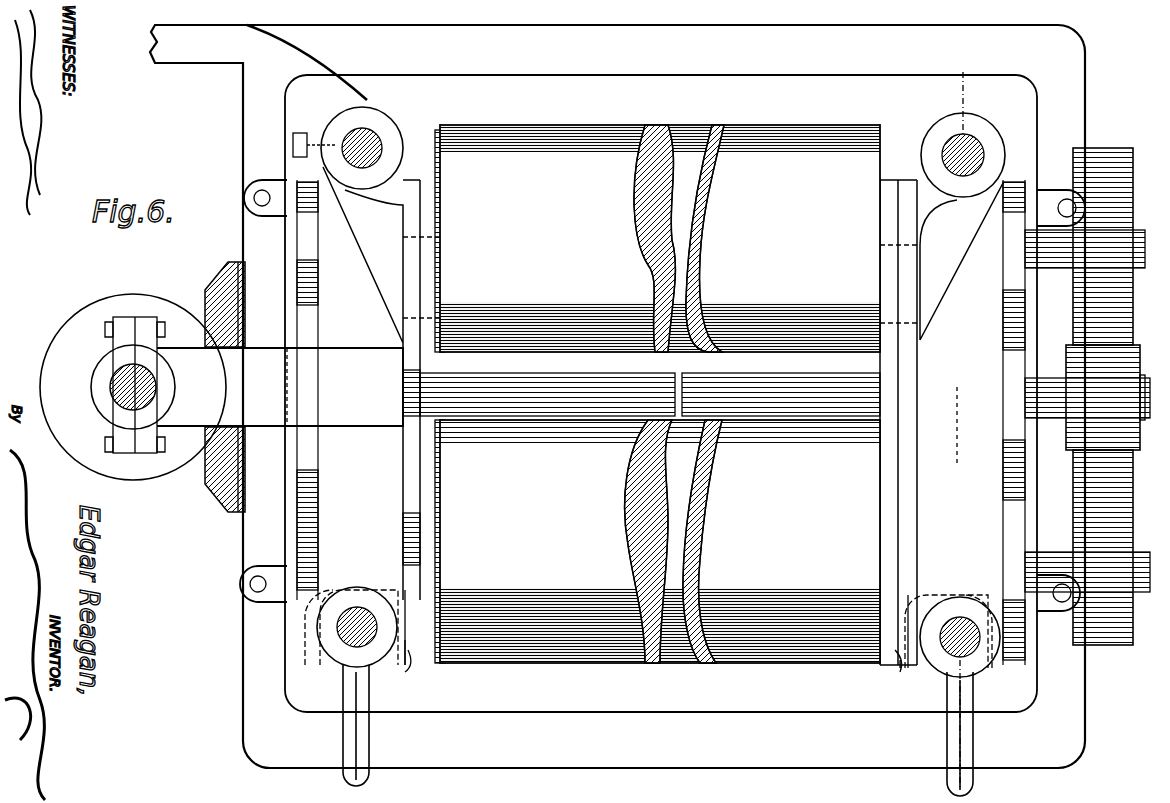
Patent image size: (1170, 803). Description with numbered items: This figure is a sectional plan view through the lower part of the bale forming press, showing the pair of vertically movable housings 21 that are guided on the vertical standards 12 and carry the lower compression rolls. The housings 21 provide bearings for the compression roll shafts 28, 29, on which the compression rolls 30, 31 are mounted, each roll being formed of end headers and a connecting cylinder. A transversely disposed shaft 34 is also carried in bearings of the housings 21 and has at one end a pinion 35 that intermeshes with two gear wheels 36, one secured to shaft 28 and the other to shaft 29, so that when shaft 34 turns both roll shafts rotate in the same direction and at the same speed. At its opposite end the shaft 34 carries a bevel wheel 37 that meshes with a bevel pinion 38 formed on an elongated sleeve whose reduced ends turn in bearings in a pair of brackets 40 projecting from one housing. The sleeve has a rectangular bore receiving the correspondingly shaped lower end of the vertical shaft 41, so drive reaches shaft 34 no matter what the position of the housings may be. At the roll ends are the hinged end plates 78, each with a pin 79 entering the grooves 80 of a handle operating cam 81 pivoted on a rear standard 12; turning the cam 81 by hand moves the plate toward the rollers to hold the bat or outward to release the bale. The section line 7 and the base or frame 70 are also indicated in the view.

The shaft center line 7 is at (960, 424).
The vertical standards 12 is at (975, 642).
The vertically movable housings 21 is at (926, 422).
The compression roll shaft 28 is at (698, 238).
The compression roll shaft 29 is at (670, 518).
The compression roll 30 is at (660, 238).
The compression roll 31 is at (660, 541).
The transversely disposed shaft 34 is at (650, 394).
The pinion 35 is at (1078, 432).
The gear wheels 36 is at (1085, 503).
The bevel wheel 37 is at (210, 284).
The bevel pinion 38 is at (108, 306).
The brackets 40 is at (280, 387).
The vertical shaft 41 is at (115, 380).
The frame 70 is at (690, 758).
The end plates 78 is at (905, 578).
The pin 79 is at (880, 672).
The grooves 80 is at (912, 670).
The handle operating cam 81 is at (978, 686).